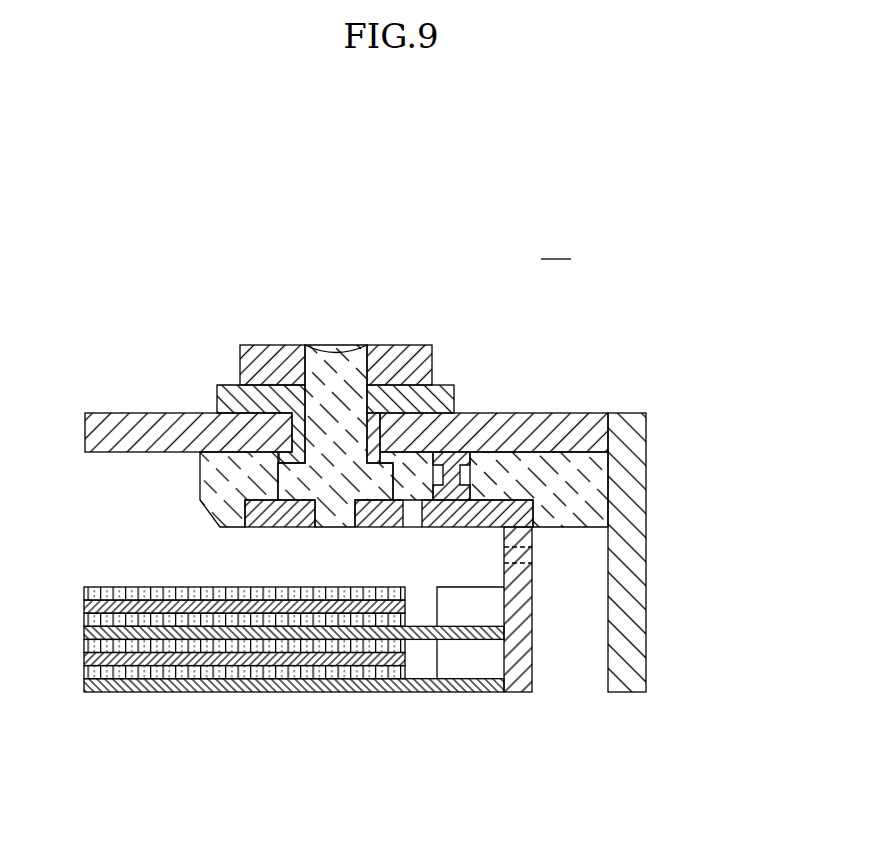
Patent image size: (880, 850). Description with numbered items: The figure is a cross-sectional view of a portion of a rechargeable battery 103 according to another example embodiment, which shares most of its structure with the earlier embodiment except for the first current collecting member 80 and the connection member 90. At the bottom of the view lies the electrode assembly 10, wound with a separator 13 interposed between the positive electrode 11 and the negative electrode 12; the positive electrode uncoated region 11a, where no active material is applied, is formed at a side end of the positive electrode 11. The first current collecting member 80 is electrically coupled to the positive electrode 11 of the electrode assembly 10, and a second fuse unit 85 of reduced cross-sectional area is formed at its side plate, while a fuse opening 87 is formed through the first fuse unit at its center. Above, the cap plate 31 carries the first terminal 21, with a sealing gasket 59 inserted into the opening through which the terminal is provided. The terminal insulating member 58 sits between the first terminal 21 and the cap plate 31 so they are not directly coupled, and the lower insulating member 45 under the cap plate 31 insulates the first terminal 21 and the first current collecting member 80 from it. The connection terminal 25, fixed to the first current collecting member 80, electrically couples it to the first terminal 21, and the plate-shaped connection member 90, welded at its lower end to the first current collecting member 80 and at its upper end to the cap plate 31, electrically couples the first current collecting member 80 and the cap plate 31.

The rechargeable battery 103 is at (556, 247).
The sealing gasket 59 is at (277, 437).
The first terminal 21 is at (405, 358).
The terminal insulating member 58 is at (443, 402).
The connection terminal 25 is at (337, 347).
The cap plate 31 is at (577, 430).
The lower insulating member 45 is at (567, 498).
The connection member 90 is at (455, 477).
The fuse opening 87 is at (412, 529).
The second fuse unit 85 is at (520, 553).
The first current collecting member 80 is at (615, 609).
The electrode assembly 10 is at (294, 637).
The positive electrode 11 is at (234, 640).
The positive electrode uncoated region 11a is at (470, 634).
The negative electrode 12 is at (300, 660).
The separator 13 is at (152, 648).